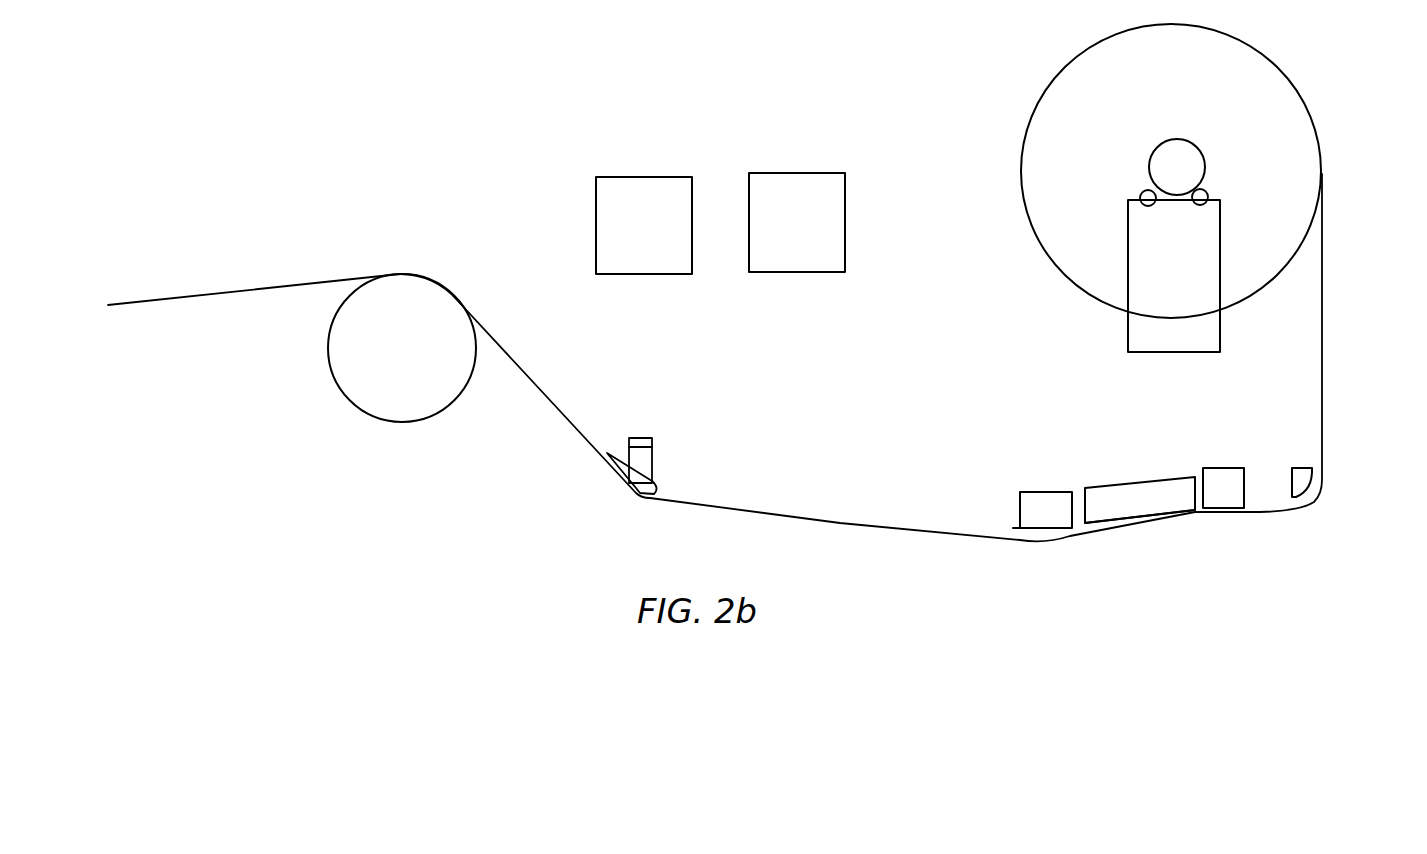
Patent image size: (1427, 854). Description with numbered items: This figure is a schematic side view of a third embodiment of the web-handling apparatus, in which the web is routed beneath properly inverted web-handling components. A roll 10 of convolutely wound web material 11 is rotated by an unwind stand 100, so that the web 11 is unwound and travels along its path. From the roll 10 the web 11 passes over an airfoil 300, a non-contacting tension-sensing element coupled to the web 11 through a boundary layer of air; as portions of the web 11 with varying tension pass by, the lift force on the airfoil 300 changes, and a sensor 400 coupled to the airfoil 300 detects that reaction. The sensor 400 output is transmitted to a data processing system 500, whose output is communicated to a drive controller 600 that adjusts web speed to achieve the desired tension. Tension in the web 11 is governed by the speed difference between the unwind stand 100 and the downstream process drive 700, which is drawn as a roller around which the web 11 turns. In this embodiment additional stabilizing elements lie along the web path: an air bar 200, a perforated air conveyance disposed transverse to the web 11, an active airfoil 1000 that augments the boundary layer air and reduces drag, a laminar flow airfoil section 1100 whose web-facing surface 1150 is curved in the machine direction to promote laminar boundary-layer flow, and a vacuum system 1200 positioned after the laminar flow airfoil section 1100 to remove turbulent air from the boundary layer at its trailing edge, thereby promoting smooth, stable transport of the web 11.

The roll 10 is at (1297, 137).
The web material 11 is at (1322, 330).
The unwind stand 100 is at (1185, 342).
The air bar 200 is at (1300, 468).
The airfoil 300 is at (652, 482).
The sensor 400 is at (652, 440).
The data processing system 500 is at (653, 183).
The drive controller 600 is at (835, 180).
The downstream process drive 700 is at (398, 410).
The active airfoil 1000 is at (1225, 475).
The laminar flow airfoil section 1100 is at (1133, 492).
The web-facing surface 1150 is at (1183, 517).
The vacuum system 1200 is at (1043, 500).